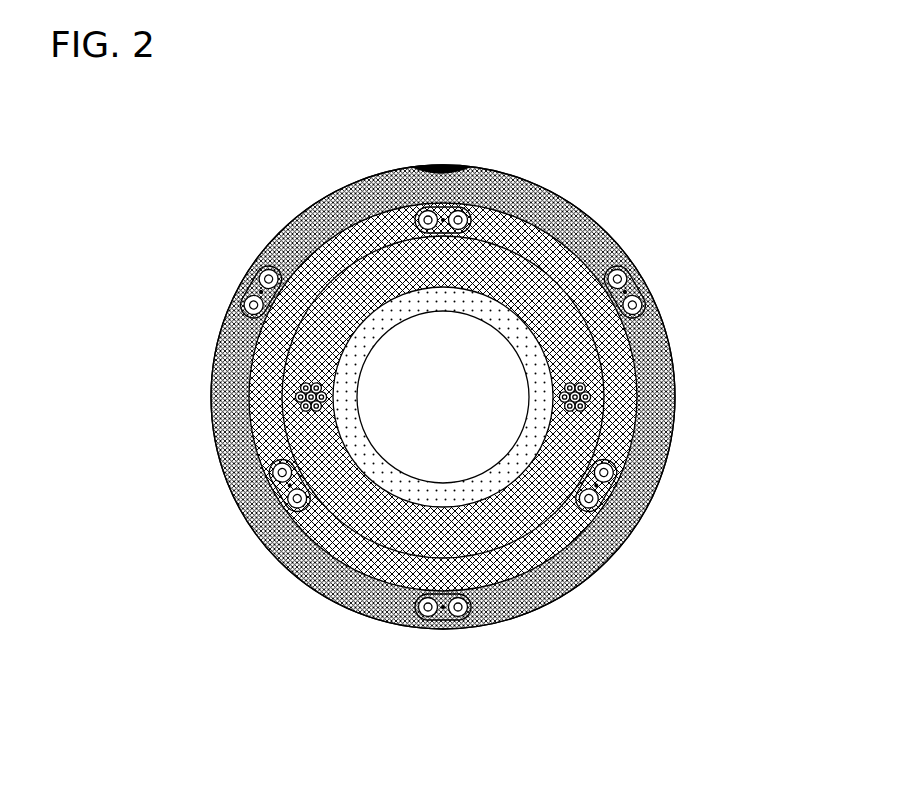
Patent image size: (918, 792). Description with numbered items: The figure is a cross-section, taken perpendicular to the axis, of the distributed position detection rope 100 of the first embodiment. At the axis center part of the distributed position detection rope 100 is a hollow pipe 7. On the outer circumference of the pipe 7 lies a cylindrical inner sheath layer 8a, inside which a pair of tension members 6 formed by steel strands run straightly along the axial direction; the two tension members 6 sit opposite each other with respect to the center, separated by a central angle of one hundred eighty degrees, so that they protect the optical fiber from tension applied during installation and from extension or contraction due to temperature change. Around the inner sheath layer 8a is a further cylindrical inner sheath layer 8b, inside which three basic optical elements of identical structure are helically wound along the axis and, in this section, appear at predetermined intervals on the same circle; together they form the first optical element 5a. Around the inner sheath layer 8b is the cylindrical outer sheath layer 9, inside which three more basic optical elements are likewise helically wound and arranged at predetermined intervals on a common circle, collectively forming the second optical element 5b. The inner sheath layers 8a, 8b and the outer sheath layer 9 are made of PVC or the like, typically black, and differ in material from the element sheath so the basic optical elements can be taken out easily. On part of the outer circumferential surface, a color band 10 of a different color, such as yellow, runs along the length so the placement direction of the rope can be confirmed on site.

The distributed position detection rope 100 is at (208, 170).
The color band 10 is at (450, 160).
The outer sheath layer 9 is at (302, 565).
The inner sheath layer 8b is at (358, 560).
The inner sheath layer 8a is at (420, 540).
The hollow pipe 7 is at (513, 478).
The tension members 6 is at (586, 407).
The first optical element 5a is at (290, 493).
The second optical element 5b is at (627, 273).